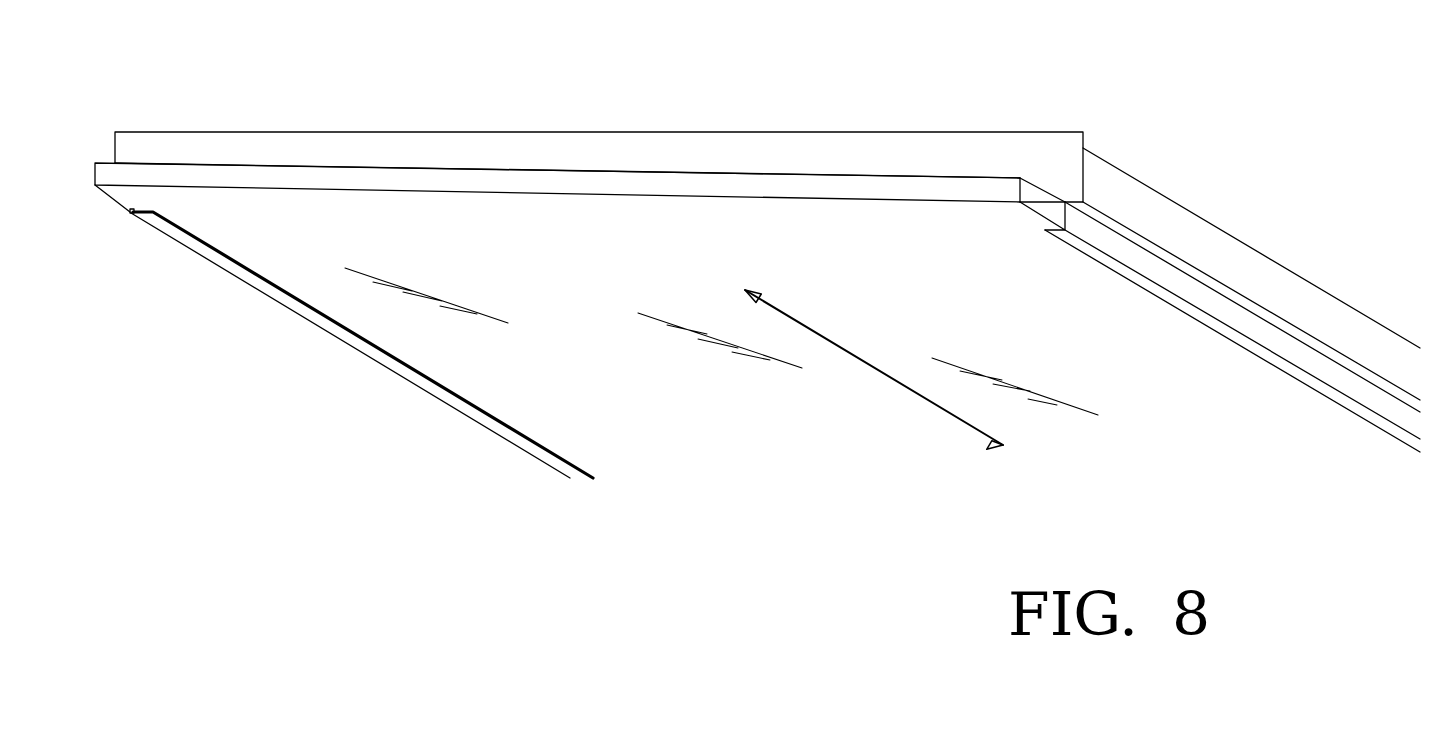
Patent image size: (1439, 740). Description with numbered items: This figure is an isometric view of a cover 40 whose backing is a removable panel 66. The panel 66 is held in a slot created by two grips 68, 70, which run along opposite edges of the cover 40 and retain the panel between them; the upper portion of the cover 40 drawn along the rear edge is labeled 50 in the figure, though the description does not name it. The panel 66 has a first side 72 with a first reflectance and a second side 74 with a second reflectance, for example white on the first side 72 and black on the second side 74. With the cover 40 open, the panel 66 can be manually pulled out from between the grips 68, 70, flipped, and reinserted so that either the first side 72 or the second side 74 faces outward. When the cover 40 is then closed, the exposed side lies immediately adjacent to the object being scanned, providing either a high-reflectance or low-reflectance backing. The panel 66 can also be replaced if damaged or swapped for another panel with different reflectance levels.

The cover 40 is at (757, 263).
The upper panel 50 is at (353, 143).
The removable panel 66 is at (308, 177).
The grip 68 is at (262, 288).
The grip 70 is at (1162, 277).
The first side 72 is at (447, 207).
The second side 74 is at (442, 168).